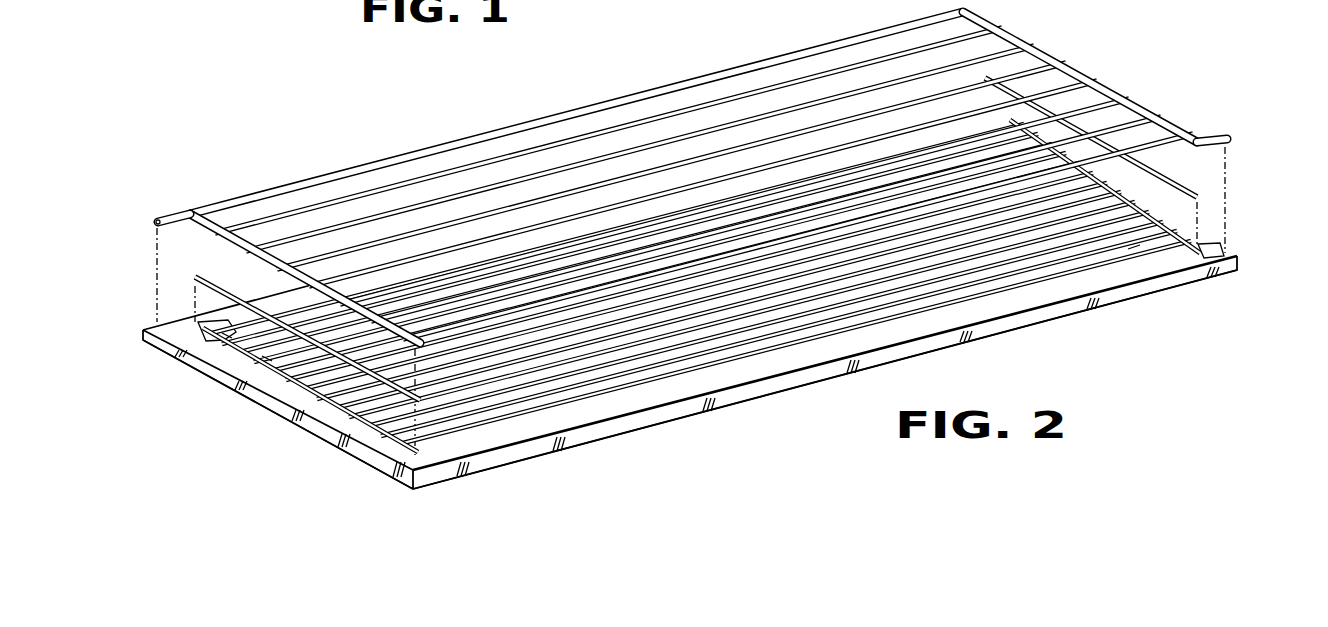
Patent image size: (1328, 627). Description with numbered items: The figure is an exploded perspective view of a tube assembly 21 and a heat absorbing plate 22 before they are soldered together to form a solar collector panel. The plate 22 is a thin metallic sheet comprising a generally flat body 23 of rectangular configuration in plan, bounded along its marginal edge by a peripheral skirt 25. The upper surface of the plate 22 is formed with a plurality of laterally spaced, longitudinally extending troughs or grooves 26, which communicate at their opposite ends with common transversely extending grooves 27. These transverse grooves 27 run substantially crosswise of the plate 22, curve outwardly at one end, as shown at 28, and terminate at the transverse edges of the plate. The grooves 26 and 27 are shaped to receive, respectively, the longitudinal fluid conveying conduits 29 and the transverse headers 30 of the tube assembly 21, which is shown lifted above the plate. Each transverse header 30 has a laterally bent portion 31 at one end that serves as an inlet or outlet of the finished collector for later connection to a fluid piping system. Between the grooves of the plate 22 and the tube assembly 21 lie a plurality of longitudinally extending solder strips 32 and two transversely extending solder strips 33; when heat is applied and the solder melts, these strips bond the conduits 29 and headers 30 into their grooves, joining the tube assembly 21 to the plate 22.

The tube assembly 21 is at (326, 176).
The heat absorbing plate 22 is at (1050, 325).
The flat body 23 is at (648, 405).
The peripheral skirt 25 is at (167, 350).
The longitudinally extending grooves 26 is at (345, 410).
The transversely extending grooves 27 is at (267, 378).
The outwardly curved groove ends 28 is at (190, 328).
The longitudinal fluid conveying conduits 29 is at (467, 197).
The transverse headers 30 is at (224, 230).
The laterally bent portions 31 is at (167, 218).
The longitudinally extending solder strips 32 is at (265, 354).
The transversely extending solder strips 33 is at (210, 285).